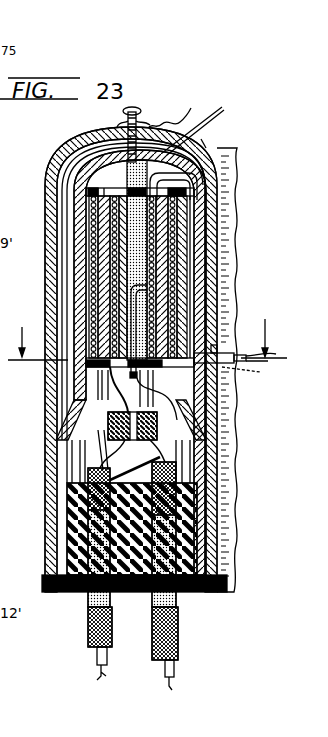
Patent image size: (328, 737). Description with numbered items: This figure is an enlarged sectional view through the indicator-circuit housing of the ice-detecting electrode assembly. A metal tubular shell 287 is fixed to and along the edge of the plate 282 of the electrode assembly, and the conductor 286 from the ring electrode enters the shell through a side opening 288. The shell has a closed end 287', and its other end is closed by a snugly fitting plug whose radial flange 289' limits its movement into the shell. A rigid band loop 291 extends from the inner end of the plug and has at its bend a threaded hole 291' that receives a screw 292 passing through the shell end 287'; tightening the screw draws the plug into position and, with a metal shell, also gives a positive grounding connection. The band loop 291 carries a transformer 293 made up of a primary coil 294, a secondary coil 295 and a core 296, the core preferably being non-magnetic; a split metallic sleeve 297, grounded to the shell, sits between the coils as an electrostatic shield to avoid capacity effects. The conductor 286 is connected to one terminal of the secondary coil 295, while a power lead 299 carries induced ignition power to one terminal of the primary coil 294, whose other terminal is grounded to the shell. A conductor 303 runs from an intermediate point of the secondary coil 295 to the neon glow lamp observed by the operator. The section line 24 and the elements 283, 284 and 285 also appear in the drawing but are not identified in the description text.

The section line 24- 24 is at (147, 331).
The plate 282 is at (249, 453).
The outer shell 283 is at (108, 359).
The inner vessel wall 284 is at (103, 355).
The tube 285 is at (270, 351).
The conductor 286 is at (255, 373).
The tubular shell 287 is at (108, 291).
The closed end 287' is at (225, 132).
The side opening 288 is at (233, 353).
The radial flange 289' is at (155, 587).
The band loop 291 is at (209, 166).
The threaded hole 291' is at (171, 111).
The screw 292 is at (125, 123).
The transformer 293 is at (186, 226).
The primary coil 294 is at (160, 242).
The secondary coil 295 is at (150, 260).
The core 296 is at (207, 125).
The split metallic sleeve 297 is at (105, 199).
The power lead 299 is at (93, 585).
The conductor 303 is at (171, 584).